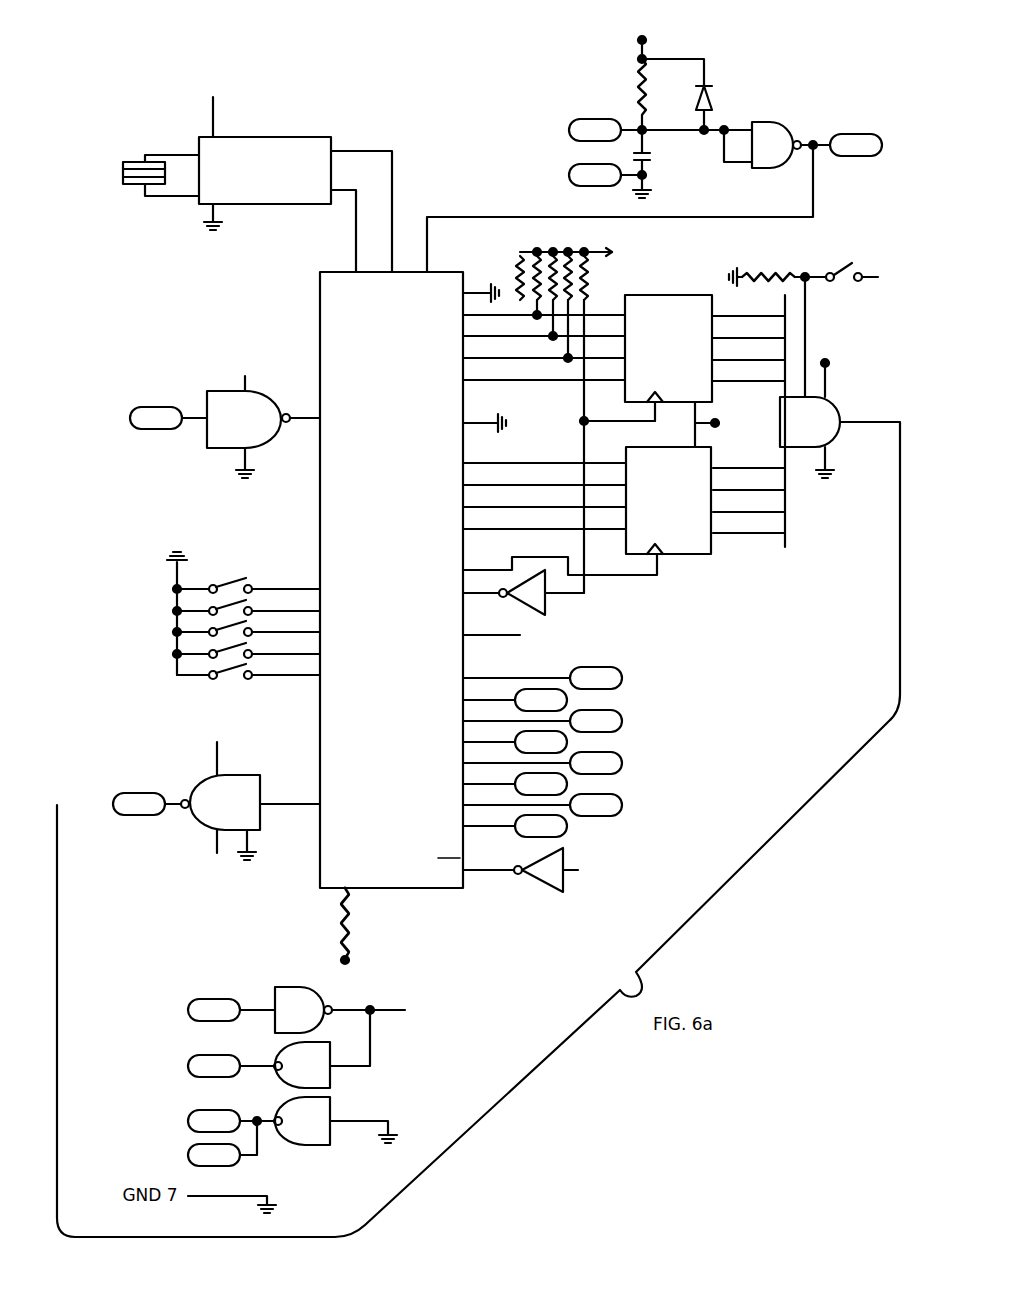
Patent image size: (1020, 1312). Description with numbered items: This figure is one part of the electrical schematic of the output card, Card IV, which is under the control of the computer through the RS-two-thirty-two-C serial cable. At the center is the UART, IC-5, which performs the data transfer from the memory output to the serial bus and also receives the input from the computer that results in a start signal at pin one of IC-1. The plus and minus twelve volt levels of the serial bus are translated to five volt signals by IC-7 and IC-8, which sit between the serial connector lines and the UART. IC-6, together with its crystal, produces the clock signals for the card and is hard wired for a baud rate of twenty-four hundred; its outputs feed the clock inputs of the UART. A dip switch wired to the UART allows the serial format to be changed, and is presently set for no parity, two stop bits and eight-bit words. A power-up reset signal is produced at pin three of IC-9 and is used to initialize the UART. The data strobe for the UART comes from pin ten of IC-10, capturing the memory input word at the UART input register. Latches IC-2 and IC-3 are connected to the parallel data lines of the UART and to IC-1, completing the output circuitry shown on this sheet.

The IC- 1 is at (520, 633).
The IC- 2 is at (668, 500).
The IC- 3 is at (637, 417).
The UART (IC-5) 5 is at (490, 559).
The IC- 6 is at (248, 174).
The IC- 7 is at (210, 417).
The IC- 8 is at (233, 945).
The IC- 9 is at (690, 316).
The IC- 10 is at (578, 872).